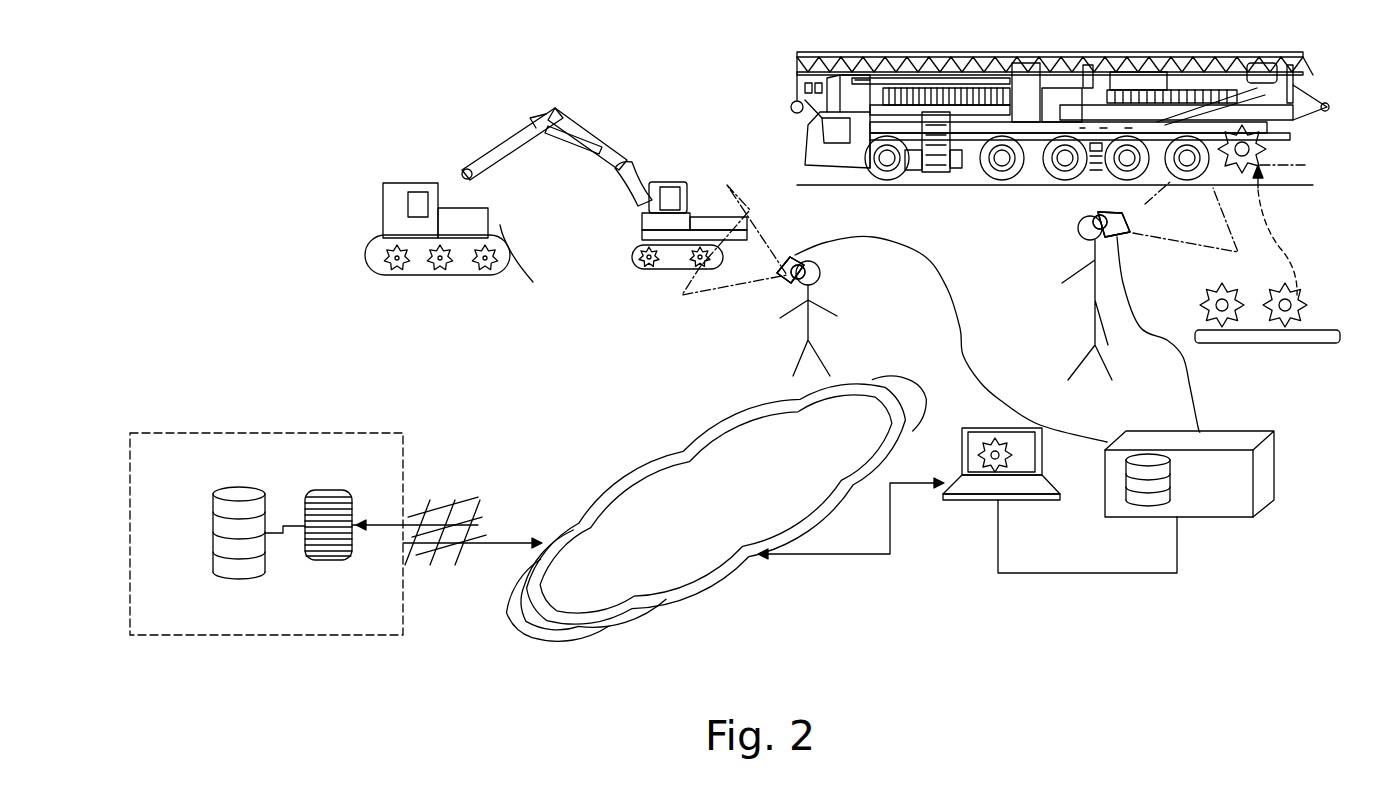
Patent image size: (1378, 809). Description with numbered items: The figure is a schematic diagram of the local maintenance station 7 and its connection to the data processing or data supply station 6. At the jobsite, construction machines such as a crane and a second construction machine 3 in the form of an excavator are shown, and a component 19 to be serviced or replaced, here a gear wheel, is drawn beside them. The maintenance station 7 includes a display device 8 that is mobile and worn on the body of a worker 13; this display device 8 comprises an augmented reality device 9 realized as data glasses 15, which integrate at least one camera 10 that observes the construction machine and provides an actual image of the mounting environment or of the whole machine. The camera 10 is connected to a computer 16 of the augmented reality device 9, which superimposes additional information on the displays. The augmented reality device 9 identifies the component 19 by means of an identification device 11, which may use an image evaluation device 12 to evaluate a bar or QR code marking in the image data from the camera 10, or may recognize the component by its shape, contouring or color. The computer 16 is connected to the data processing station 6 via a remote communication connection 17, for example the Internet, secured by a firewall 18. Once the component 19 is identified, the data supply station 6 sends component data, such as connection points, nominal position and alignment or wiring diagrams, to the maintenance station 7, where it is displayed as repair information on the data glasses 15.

The second construction machine 3 is at (617, 140).
The data processing station 6 is at (354, 618).
The maintenance station 7 is at (1252, 517).
The display device 8 is at (801, 255).
The augmented reality device 9 is at (758, 284).
The camera 10 is at (786, 262).
The identification device 11 is at (1150, 505).
The image evaluation device 12 is at (1170, 487).
The worker 13 is at (812, 320).
The data glasses 15 is at (780, 283).
The computer 16 is at (1176, 476).
The communication connection 17 is at (815, 560).
The firewall 18 is at (466, 493).
The component 19 is at (1266, 144).